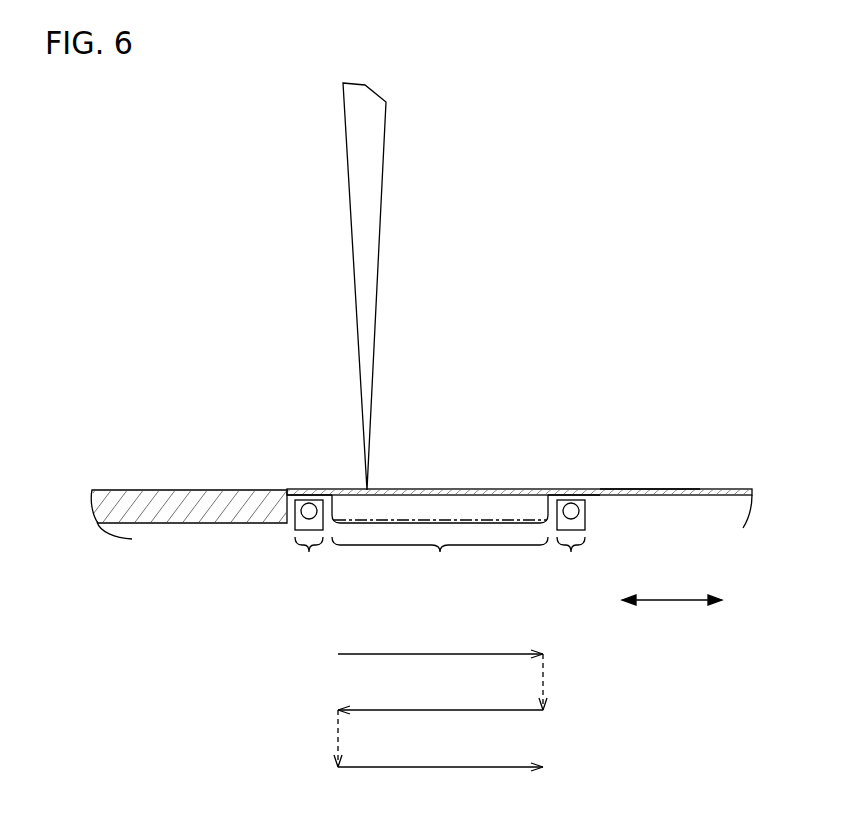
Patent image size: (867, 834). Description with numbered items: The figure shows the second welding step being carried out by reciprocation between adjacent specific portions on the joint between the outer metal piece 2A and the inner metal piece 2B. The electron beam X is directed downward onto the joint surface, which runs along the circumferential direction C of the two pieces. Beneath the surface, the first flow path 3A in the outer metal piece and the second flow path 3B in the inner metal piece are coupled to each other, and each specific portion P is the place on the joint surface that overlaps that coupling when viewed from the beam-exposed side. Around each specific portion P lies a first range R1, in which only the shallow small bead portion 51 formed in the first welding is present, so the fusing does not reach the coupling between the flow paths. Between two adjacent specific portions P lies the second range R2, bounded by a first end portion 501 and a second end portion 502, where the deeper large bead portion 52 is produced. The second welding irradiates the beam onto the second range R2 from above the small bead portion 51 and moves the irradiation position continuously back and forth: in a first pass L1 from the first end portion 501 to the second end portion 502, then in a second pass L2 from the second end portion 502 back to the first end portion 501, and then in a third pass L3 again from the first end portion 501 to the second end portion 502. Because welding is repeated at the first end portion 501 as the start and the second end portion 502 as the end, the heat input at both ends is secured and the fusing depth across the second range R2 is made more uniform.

The electron beam X is at (368, 152).
The large bead portion 52 is at (185, 506).
The small bead portion 51 is at (648, 490).
The first end portion 501 is at (352, 490).
The second end portion 502 is at (528, 490).
The outer metal piece 2A is at (666, 381).
The inner metal piece 2B is at (612, 360).
The first flow path 3A is at (389, 548).
The second flow path 3B is at (306, 511).
The specific portion P is at (310, 485).
The first range R1 is at (439, 558).
The second range R2 is at (440, 558).
The circumferential direction C is at (672, 589).
The first pass L1 is at (442, 669).
The second pass L2 is at (438, 726).
The third pass L3 is at (440, 757).